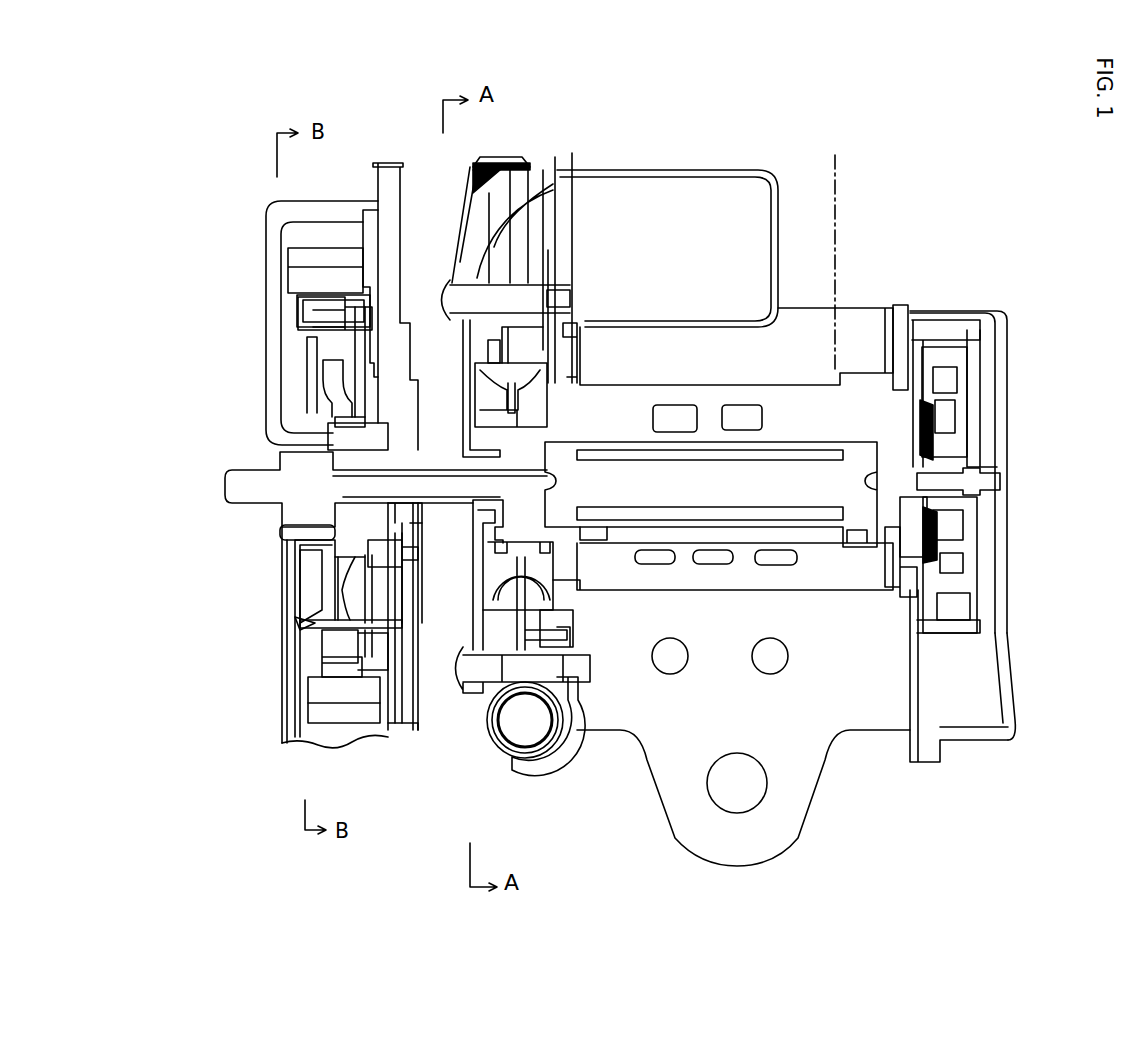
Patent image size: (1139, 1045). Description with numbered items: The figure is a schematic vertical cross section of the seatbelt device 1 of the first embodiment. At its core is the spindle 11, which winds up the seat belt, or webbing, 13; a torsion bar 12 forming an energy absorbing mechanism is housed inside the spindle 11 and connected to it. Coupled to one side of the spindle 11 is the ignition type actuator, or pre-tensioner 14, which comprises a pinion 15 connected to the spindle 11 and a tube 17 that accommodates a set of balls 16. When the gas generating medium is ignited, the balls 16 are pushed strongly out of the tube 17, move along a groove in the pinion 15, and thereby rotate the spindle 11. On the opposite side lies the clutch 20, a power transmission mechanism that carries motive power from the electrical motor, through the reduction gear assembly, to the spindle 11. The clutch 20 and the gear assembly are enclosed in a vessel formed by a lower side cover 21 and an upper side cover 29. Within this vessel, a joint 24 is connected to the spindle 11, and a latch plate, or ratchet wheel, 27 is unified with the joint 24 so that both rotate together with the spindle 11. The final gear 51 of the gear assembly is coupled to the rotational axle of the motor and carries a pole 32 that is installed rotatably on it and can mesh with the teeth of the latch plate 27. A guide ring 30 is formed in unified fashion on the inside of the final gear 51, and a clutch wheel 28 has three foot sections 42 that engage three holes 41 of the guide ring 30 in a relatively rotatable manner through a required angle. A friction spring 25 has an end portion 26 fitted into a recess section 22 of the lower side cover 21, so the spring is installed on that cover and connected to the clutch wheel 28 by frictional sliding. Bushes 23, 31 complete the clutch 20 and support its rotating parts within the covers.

The seatbelt device 1 is at (757, 148).
The spindle 11 is at (608, 396).
The torsion bar 12 is at (780, 480).
The seat belt (webbing) 13 is at (822, 272).
The pre-tensioner 14 is at (540, 797).
The pinion 15 is at (483, 400).
The set of balls 16 is at (517, 732).
The tube 17 is at (487, 728).
The clutch 20 is at (352, 155).
The lower side cover 21 is at (410, 550).
The recess section 22 is at (407, 613).
The bush 23 is at (410, 521).
The joint 24 is at (247, 470).
The friction spring 25 is at (373, 585).
The end portion 26 is at (410, 645).
The latch plate (ratchet wheel) 27 is at (307, 398).
The clutch wheel 28 is at (313, 622).
The upper side cover 29 is at (287, 593).
The guide ring 30 is at (305, 575).
The bush 31 is at (280, 530).
The pole 32 is at (287, 333).
The holes 41 is at (323, 622).
The foot sections 42 is at (313, 623).
The final gear 51 is at (317, 690).